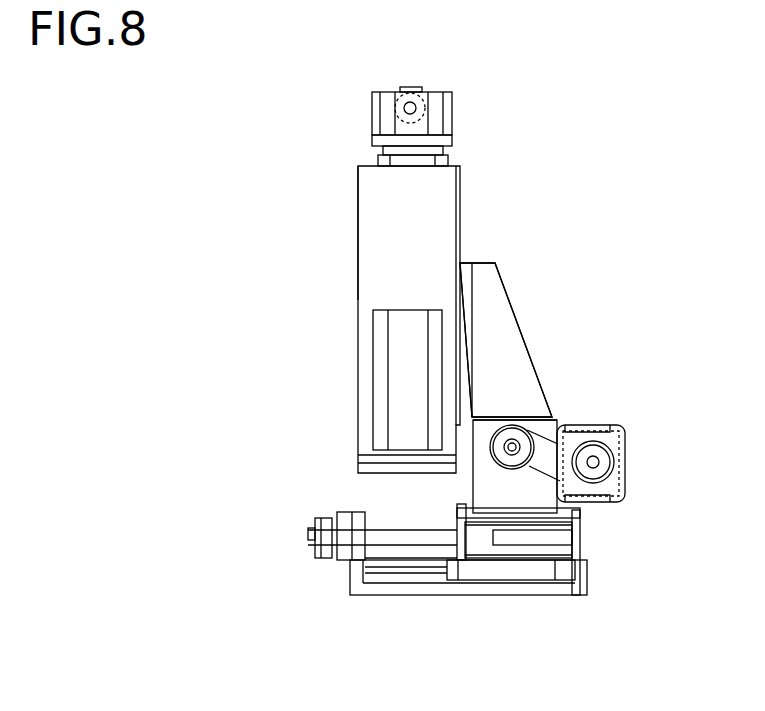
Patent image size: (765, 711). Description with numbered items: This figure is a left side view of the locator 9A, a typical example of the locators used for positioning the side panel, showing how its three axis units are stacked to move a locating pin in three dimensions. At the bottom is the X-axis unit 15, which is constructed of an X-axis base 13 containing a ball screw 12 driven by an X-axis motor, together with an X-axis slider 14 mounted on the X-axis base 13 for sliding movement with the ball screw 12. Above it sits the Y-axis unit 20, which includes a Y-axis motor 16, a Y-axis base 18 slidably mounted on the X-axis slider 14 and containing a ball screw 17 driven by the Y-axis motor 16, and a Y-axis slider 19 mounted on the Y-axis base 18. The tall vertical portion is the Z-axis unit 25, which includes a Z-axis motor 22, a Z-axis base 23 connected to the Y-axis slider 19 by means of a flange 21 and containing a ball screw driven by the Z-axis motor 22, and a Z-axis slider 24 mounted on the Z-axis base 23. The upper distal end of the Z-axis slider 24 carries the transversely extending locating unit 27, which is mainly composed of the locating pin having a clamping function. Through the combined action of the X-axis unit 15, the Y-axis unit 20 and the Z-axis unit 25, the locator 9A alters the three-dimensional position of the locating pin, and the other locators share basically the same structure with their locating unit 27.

The locator 9A is at (518, 204).
The locating unit 27 is at (428, 103).
The Z-axis slider 24 is at (446, 160).
The Z-axis unit 25 is at (356, 201).
The Z-axis base 23 is at (368, 257).
The Z-axis motor 22 is at (400, 350).
The flange 21 is at (484, 281).
The Y-axis slider 19 is at (494, 420).
The Y-axis base 18 is at (528, 496).
The ball screw 17 is at (514, 445).
The Y-axis motor 16 is at (626, 438).
The Y-axis unit 20 is at (627, 485).
The X-axis slider 14 is at (456, 508).
The ball screw 12 is at (400, 545).
The X-axis unit 15 is at (378, 0).
The X-axis base 13 is at (513, 592).